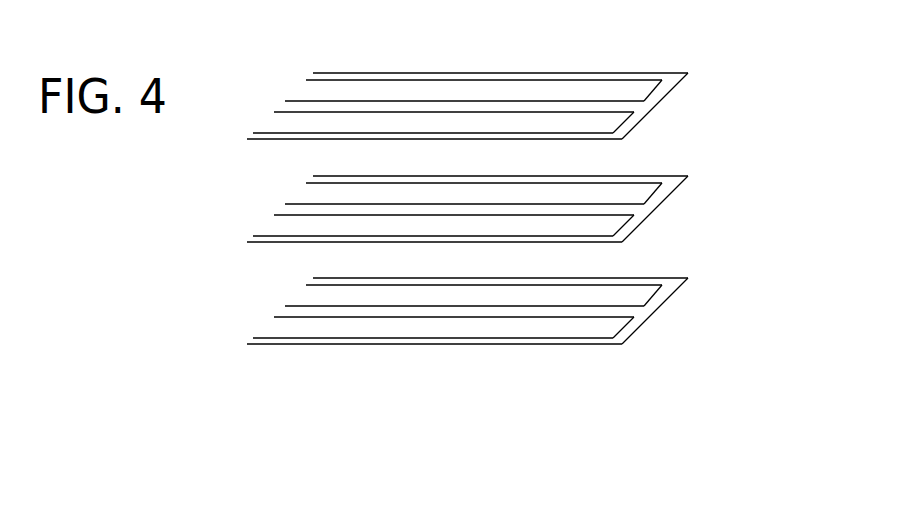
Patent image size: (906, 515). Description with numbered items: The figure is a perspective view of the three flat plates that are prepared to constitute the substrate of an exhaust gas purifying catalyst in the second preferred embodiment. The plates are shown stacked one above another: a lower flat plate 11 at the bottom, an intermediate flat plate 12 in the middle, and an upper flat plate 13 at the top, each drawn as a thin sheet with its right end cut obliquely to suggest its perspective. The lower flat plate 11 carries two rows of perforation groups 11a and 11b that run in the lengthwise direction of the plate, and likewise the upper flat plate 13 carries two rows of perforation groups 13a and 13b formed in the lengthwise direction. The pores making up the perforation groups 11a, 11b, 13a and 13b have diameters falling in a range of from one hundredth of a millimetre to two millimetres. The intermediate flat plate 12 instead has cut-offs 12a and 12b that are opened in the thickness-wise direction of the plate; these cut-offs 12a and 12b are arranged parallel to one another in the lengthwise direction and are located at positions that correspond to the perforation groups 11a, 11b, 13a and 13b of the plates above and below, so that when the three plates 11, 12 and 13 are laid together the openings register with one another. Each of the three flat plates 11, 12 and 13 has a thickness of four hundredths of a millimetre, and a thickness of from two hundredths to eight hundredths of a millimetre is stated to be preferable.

The lower flat plate 11 is at (526, 350).
The perforation group 11a is at (608, 329).
The perforation group 11b is at (636, 299).
The intermediate flat plate 12 is at (524, 244).
The cut-off 12a is at (608, 227).
The cut-off 12b is at (636, 197).
The upper flat plate 13 is at (526, 83).
The perforation group 13a is at (608, 124).
The perforation group 13b is at (636, 94).